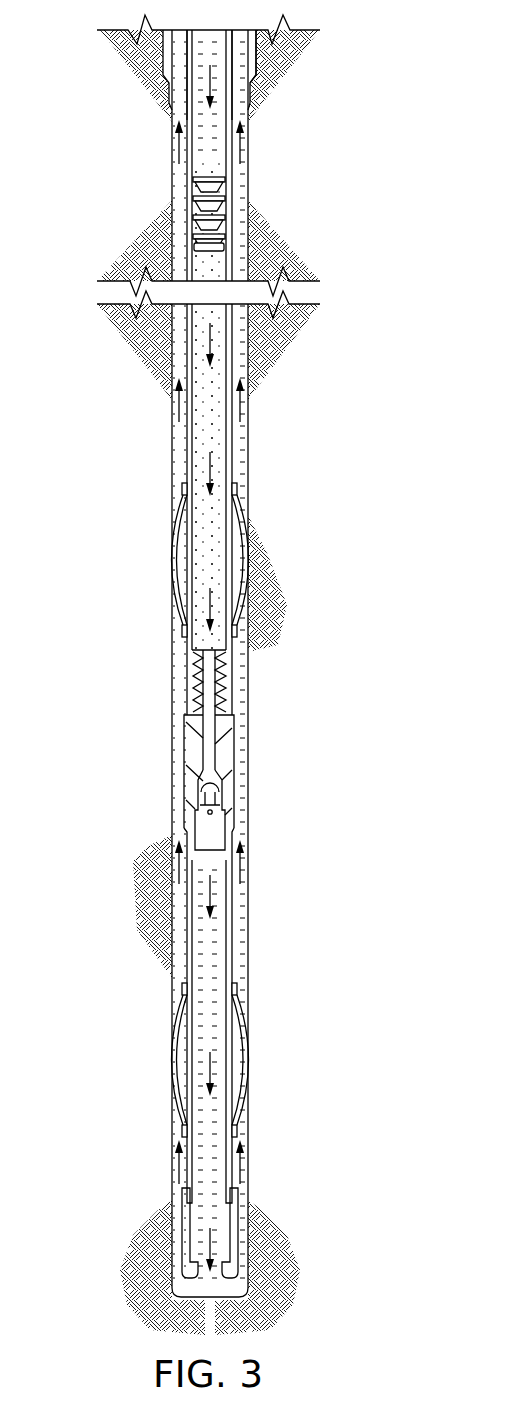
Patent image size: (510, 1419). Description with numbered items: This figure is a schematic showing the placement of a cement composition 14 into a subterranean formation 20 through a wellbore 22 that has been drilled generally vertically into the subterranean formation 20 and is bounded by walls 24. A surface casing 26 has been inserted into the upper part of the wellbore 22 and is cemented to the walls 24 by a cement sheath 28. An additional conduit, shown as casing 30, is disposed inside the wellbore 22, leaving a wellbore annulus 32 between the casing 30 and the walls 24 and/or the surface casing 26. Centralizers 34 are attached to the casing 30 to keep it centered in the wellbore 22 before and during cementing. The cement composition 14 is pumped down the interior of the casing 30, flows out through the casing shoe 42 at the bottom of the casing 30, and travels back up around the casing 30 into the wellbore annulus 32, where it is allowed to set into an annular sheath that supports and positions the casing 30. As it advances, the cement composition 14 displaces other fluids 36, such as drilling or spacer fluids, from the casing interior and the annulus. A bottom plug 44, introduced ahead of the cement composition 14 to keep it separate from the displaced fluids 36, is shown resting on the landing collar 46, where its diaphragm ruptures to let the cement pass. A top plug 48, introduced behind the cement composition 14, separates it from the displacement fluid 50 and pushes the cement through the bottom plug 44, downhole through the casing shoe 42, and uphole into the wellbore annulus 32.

The cement composition 14 is at (200, 339).
The subterranean formation 20 is at (104, 597).
The wellbore 22 is at (250, 455).
The walls 24 is at (248, 188).
The surface casing 26 is at (253, 78).
The cement sheath 28 is at (167, 78).
The casing 30 is at (220, 343).
The wellbore annulus 32 is at (178, 454).
The centralizers 34 is at (172, 1060).
The displaced fluids 36 is at (212, 892).
The casing shoe 42 is at (237, 1230).
The bottom plug 44 is at (230, 702).
The landing collar 46 is at (185, 727).
The top plug 48 is at (197, 202).
The displacement fluid 50 is at (197, 82).